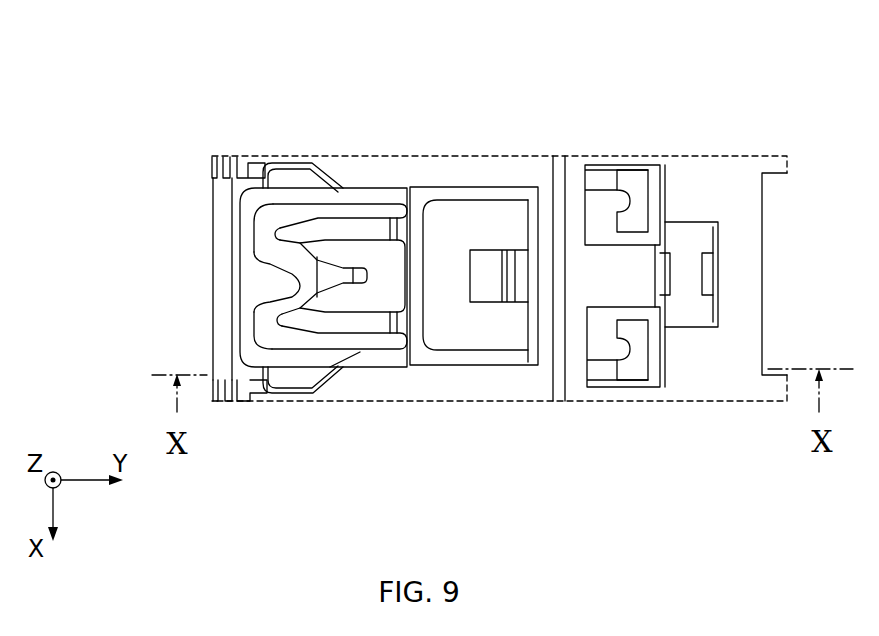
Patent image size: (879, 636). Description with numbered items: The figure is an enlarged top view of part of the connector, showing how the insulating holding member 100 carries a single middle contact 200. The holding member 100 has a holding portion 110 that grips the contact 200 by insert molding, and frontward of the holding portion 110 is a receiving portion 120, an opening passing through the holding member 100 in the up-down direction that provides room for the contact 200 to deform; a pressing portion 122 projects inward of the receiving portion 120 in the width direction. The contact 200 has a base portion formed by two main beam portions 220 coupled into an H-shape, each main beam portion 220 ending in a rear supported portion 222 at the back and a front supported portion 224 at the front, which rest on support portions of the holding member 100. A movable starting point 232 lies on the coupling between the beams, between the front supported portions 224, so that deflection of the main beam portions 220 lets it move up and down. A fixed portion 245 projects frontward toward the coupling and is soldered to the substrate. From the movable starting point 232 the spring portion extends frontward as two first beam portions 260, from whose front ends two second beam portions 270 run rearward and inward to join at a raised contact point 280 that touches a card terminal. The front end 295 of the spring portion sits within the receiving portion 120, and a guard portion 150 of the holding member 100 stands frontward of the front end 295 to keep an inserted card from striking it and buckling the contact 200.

The holding member 100 is at (728, 378).
The holding portion 110 is at (603, 220).
The receiving portion 120 is at (492, 329).
The pressing portion 122 is at (450, 184).
The guard portion 150 is at (213, 298).
The contact 200 is at (265, 358).
The main beam portion 220 is at (494, 191).
The rear supported portion 222 is at (632, 180).
The front supported portion 224 is at (290, 181).
The movable starting point 232 is at (415, 440).
The fixed portion 245 is at (487, 275).
The first beam portion 260 is at (345, 413).
The second beam portion 270 is at (288, 256).
The contact point 280 is at (343, 276).
The front end 295 is at (252, 227).